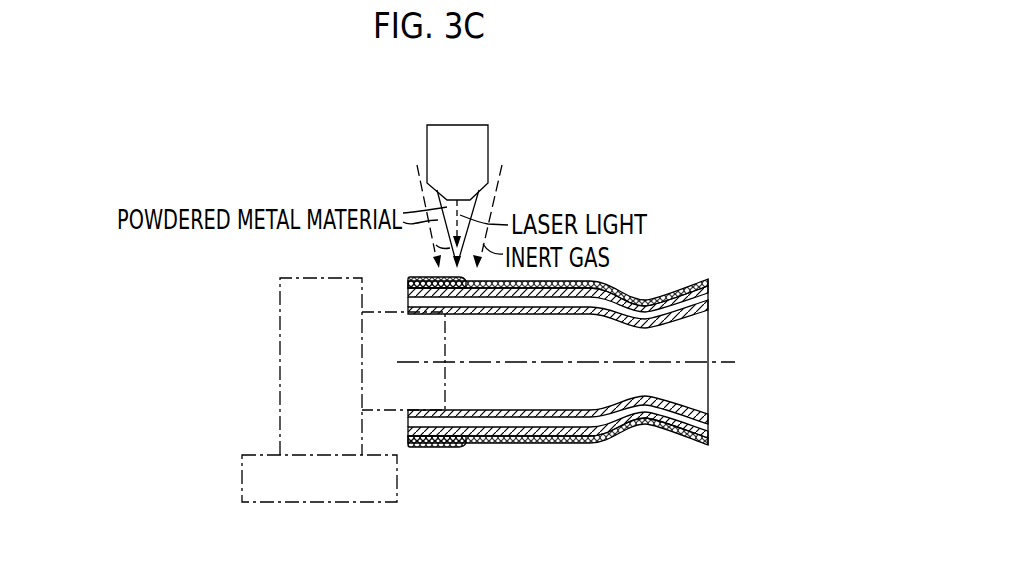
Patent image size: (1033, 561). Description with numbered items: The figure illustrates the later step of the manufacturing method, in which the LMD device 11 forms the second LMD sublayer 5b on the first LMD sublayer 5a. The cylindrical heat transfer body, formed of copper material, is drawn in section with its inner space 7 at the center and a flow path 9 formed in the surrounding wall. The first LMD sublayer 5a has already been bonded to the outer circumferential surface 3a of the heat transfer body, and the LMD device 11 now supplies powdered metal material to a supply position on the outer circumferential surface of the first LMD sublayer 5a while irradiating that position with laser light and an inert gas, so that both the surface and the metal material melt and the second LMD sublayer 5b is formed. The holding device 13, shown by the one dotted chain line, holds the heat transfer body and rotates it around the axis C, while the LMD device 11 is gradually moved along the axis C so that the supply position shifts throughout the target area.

The LMD device 11 is at (421, 139).
The holding device 13 is at (274, 301).
The first LMD sublayer 5a is at (628, 295).
The second LMD sublayer 5b is at (415, 278).
The outer circumferential surface 3a is at (571, 438).
The inner space 7 is at (547, 391).
The flow path 9 is at (513, 423).
The axis C is at (575, 363).